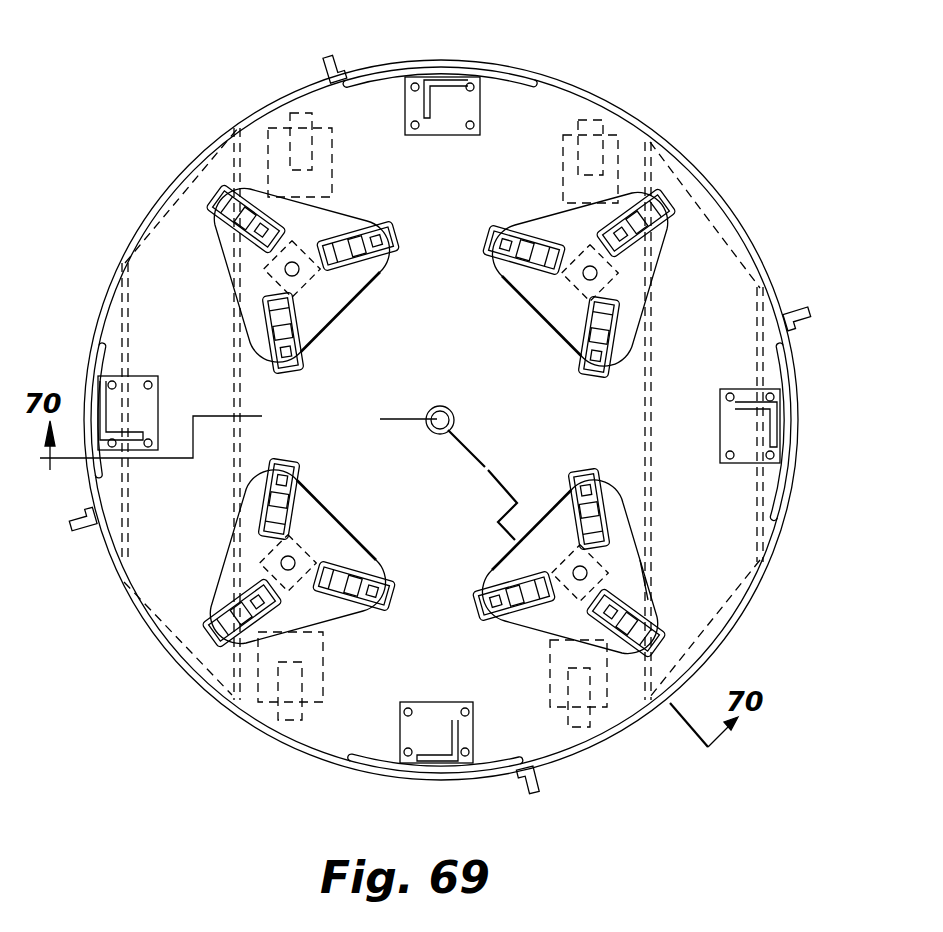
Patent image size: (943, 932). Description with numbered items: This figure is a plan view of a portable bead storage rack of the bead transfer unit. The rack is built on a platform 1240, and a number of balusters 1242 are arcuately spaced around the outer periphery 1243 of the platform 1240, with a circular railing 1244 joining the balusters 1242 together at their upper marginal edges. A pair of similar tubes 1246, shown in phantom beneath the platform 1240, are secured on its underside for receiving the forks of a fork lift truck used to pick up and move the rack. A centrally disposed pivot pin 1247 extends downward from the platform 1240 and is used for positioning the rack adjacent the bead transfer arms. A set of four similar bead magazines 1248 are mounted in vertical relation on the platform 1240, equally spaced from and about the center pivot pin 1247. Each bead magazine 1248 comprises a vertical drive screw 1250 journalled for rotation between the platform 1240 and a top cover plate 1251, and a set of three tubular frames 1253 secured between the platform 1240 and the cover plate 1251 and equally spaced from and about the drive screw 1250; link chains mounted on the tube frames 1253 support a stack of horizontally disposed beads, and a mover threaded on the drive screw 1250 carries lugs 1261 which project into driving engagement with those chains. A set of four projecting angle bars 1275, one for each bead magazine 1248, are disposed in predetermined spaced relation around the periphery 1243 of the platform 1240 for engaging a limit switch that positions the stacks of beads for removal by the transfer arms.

The platform 1240 is at (577, 75).
The outer periphery 1243 is at (594, 745).
The circular railing 1244 is at (371, 76).
The projecting angle bars 1275 is at (328, 62).
The balusters 1242 is at (434, 112).
The tubes 1246 is at (746, 226).
The pivot pin 1247 is at (447, 406).
The bead magazines 1248 is at (343, 203).
The tubular frames 1253 is at (398, 228).
The drive screw 1250 is at (298, 276).
The top cover plate 1251 is at (352, 292).
The lugs 1261 is at (646, 582).